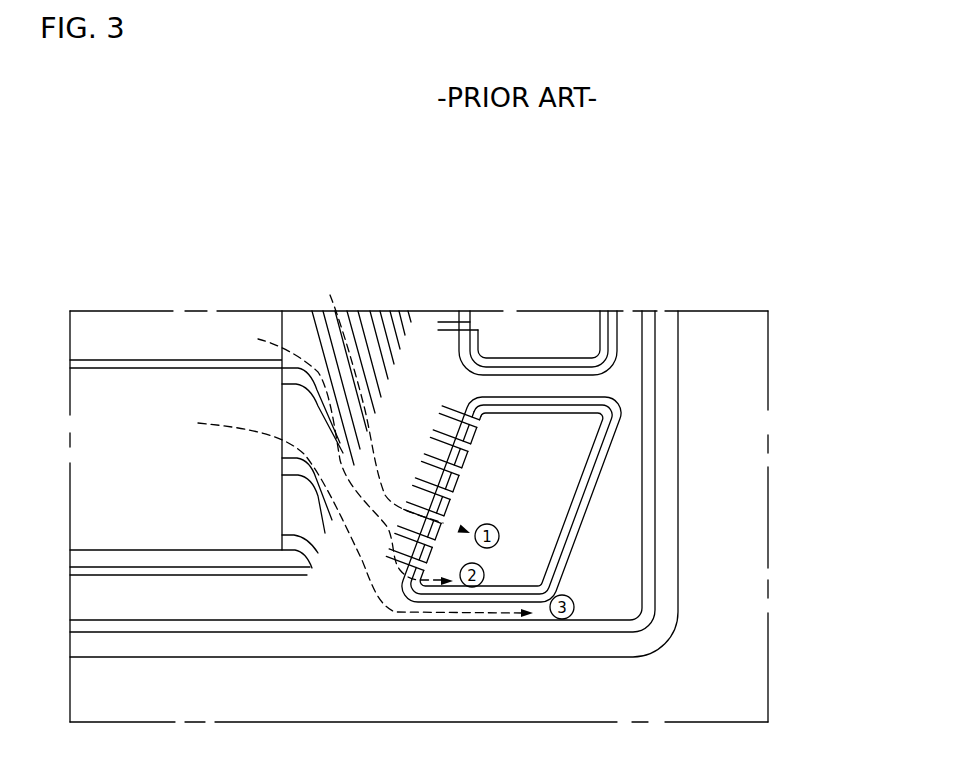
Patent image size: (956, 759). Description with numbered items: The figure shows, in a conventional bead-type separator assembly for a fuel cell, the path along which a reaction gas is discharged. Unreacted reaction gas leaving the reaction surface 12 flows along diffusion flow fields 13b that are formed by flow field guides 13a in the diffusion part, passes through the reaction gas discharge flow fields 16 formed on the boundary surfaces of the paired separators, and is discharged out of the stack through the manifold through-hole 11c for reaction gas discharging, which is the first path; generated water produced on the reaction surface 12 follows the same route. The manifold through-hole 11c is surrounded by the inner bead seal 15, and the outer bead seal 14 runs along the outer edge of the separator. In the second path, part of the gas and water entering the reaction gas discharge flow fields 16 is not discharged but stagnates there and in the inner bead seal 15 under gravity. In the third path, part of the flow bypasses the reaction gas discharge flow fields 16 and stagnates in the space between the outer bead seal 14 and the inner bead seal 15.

The reaction surface 12 is at (187, 470).
The flow field guides 13a is at (289, 380).
The diffusion flow fields 13b is at (358, 327).
The manifold through-hole for reaction gas discharging 11c is at (540, 500).
The outer bead seal 14 is at (648, 477).
The inner bead seal 15 is at (580, 520).
The reaction gas discharge flow fields 16 is at (478, 465).